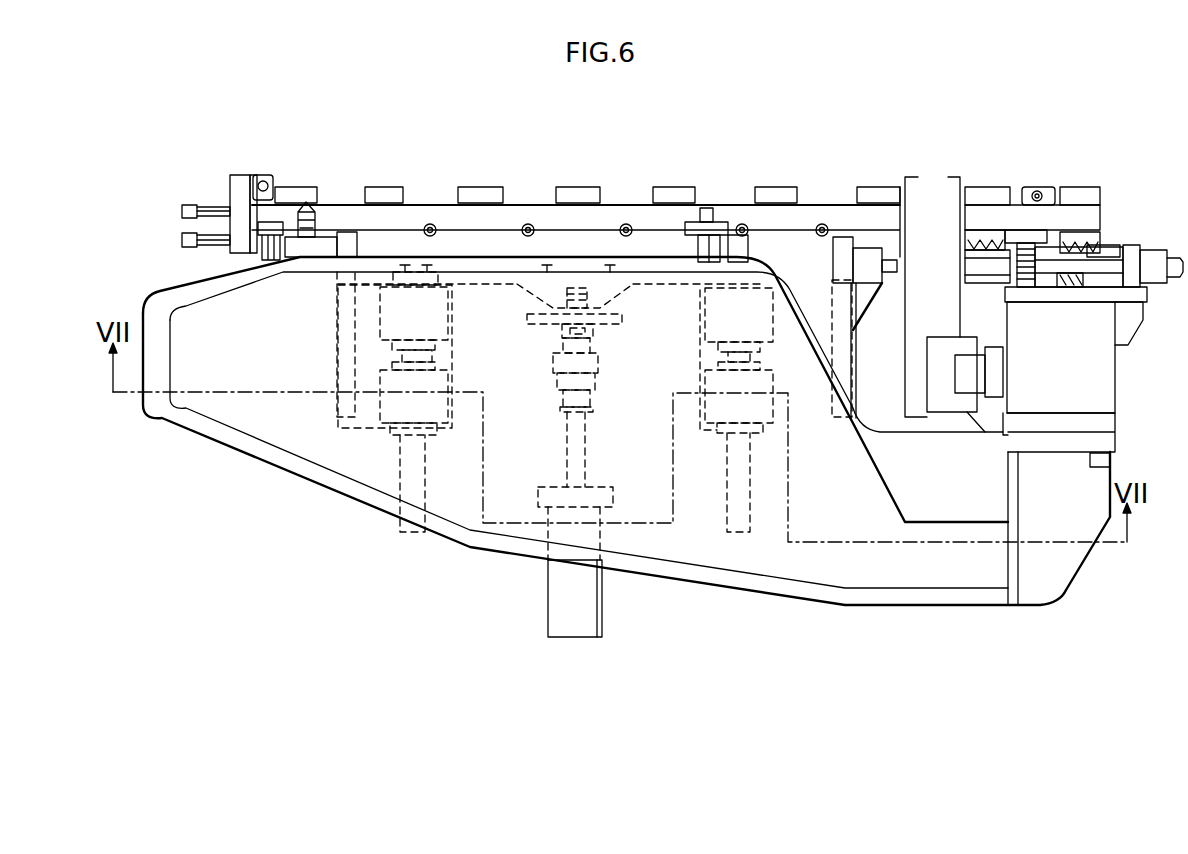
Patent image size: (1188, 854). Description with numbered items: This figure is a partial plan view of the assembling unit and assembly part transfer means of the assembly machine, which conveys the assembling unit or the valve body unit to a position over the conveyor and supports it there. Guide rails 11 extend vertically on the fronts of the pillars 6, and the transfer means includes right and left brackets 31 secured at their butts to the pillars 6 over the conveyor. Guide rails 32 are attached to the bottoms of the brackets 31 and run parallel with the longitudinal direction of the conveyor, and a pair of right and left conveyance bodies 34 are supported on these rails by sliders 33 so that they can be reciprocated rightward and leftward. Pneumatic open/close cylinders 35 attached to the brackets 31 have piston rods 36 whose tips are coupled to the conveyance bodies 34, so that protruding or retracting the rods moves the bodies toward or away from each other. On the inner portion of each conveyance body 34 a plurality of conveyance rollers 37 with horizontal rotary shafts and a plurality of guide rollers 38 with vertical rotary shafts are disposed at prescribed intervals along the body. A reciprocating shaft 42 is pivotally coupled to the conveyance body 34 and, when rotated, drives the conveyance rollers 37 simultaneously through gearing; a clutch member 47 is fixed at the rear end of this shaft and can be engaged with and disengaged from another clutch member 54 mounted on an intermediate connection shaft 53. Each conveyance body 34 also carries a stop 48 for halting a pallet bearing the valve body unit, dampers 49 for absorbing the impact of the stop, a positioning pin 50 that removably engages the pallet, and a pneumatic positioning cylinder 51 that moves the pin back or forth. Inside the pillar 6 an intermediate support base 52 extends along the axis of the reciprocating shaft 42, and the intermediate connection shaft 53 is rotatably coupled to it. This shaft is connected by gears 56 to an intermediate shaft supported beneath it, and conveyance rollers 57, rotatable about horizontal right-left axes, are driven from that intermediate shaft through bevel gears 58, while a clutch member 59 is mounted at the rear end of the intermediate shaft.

The pillar 6 is at (1095, 380).
The guide rail 11 is at (960, 375).
The bracket 31 is at (950, 575).
The guide rail 32 is at (412, 537).
The slider 33 is at (392, 408).
The conveyance body 34 is at (413, 222).
The pneumatic open/close cylinder 35 is at (558, 618).
The piston rod 36 is at (568, 443).
The conveyance roller 37 is at (307, 192).
The guide roller 38 is at (822, 224).
The reciprocating shaft 42 is at (903, 263).
The clutch member 47 is at (867, 255).
The stop 48 is at (243, 192).
The damper 49 is at (185, 240).
The positioning pin 50 is at (305, 214).
The pneumatic positioning cylinder 51 is at (300, 250).
The intermediate support base 52 is at (1145, 325).
The intermediate connection shaft 53 is at (1115, 258).
The clutch member 54 is at (965, 270).
The gear 56 is at (1025, 285).
The conveyance roller 57 is at (1070, 195).
The bevel gear 58 is at (1100, 248).
The clutch member 59 is at (1157, 285).